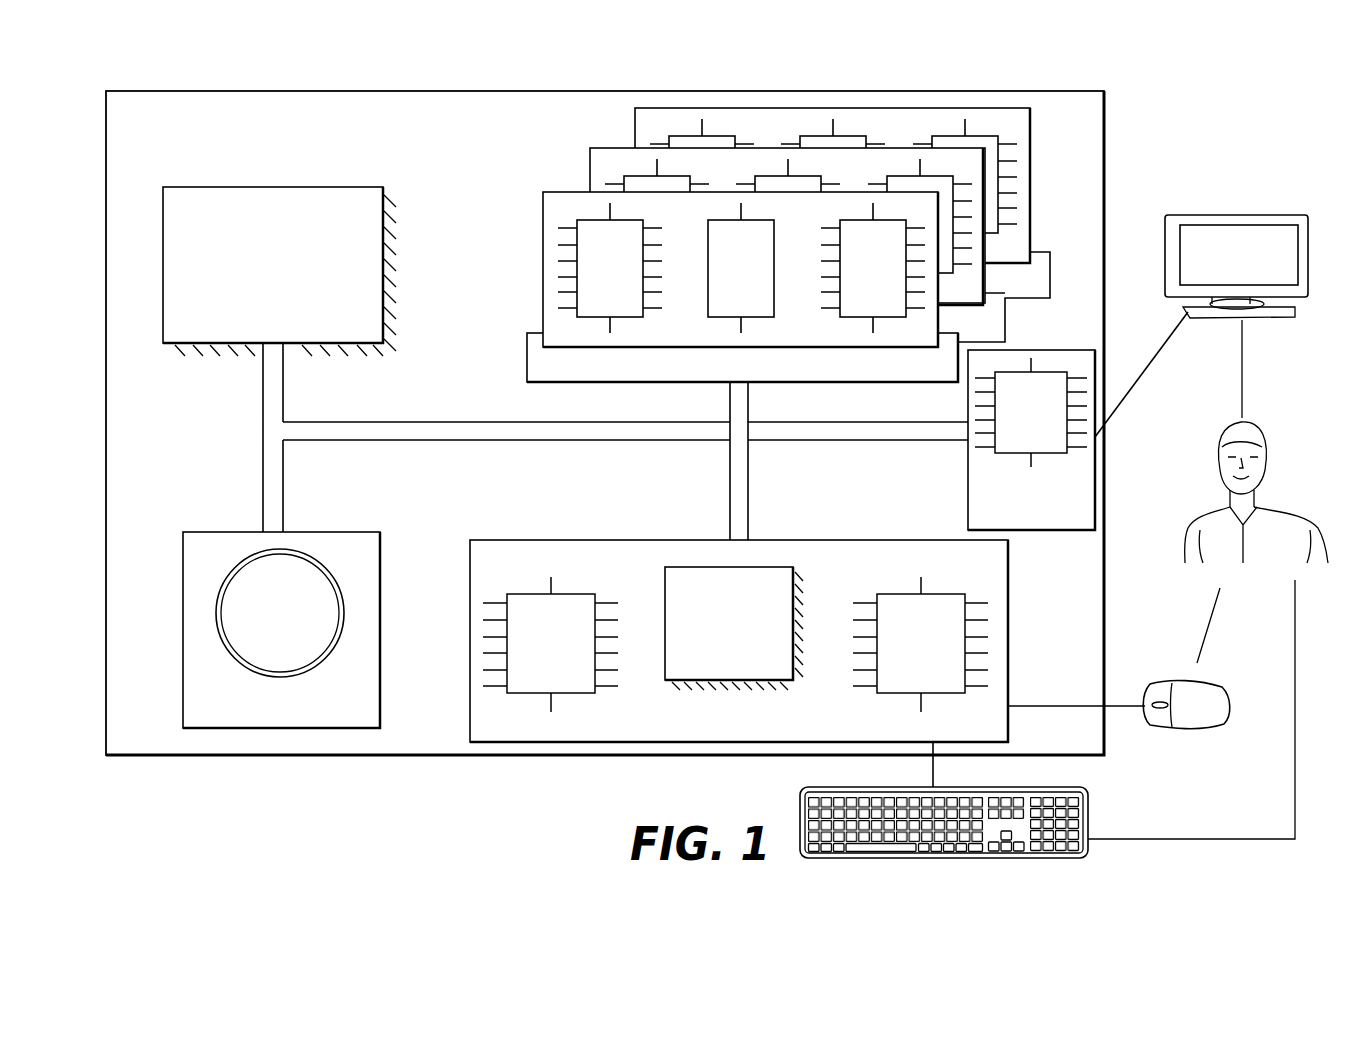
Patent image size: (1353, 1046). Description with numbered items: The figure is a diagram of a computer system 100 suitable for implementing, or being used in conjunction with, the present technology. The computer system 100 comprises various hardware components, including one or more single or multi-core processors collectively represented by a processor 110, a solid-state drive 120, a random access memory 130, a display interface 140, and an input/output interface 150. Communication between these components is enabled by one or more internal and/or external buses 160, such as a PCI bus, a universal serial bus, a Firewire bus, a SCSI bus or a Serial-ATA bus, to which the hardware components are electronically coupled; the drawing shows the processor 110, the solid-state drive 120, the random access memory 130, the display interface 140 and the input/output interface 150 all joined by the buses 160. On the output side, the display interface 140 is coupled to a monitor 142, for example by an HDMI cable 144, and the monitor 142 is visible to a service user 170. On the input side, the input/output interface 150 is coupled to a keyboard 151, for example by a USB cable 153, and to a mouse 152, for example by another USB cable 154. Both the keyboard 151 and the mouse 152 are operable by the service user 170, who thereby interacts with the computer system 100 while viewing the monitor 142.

The computer system 100 is at (367, 80).
The processor 110 is at (360, 187).
The solid-state drive 120 is at (380, 562).
The random access memory 130 is at (757, 122).
The display interface 140 is at (1047, 350).
The monitor 142 is at (1248, 215).
The HDMI cable 144 is at (1143, 370).
The input/output interface 150 is at (930, 540).
The keyboard 151 is at (1088, 815).
The mouse 152 is at (1160, 688).
The USB cable 153 is at (935, 765).
The USB cable 154 is at (1047, 706).
The buses 160 is at (748, 512).
The service user 170 is at (1270, 462).